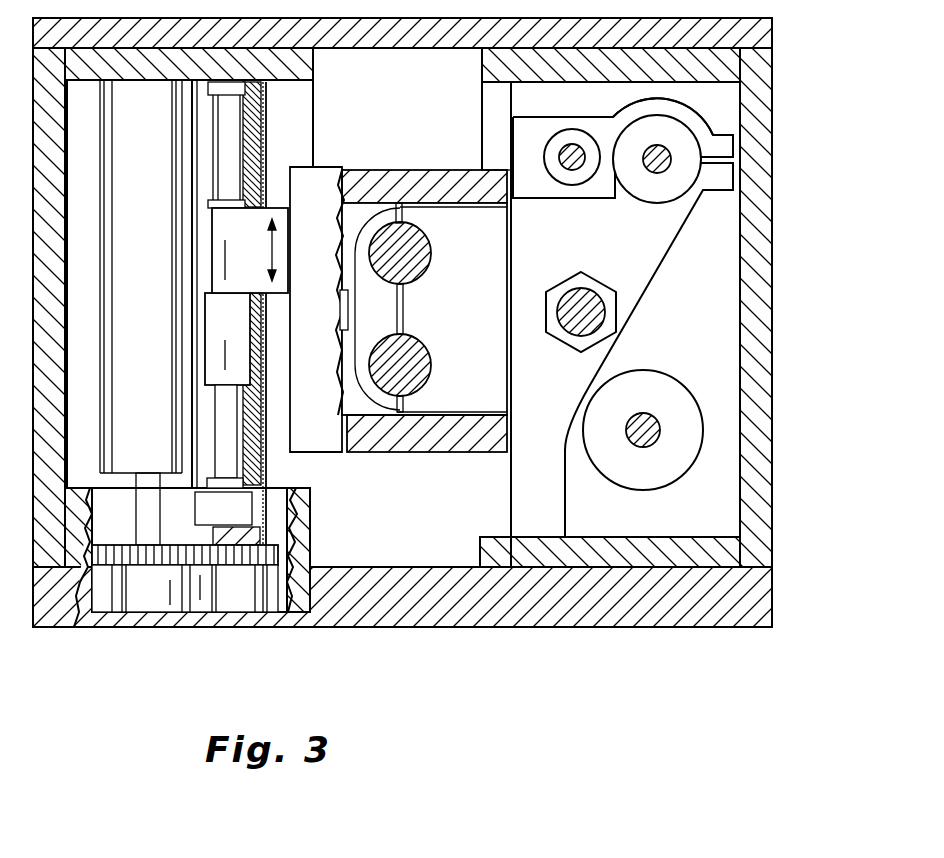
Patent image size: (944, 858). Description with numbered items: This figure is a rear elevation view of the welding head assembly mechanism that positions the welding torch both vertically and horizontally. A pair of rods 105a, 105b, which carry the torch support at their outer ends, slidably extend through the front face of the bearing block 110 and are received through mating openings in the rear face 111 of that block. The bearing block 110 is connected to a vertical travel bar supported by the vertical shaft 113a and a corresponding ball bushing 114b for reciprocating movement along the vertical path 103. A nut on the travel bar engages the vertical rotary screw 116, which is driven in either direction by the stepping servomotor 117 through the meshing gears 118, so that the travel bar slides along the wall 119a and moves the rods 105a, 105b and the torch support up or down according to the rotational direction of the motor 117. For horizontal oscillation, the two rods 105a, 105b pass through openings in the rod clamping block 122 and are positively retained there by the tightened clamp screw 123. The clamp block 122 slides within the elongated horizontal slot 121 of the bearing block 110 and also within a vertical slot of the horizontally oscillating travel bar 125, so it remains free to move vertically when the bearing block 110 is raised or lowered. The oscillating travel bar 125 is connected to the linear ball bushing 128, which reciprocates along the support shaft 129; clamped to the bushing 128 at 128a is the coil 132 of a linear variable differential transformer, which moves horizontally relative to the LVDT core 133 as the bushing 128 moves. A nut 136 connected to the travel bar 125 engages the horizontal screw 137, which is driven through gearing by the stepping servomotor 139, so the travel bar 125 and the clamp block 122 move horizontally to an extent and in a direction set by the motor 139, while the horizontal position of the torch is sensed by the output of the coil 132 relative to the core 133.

The vertical path 103 is at (270, 251).
The rod 105a is at (430, 250).
The rod 105b is at (430, 362).
The bearing block 110 is at (402, 168).
The rear face of the bearing block 111 is at (337, 437).
The vertical shaft 113a is at (230, 146).
The ball bushing 114b is at (245, 337).
The vertical rotary screw 116 is at (263, 115).
The stepping servomotor 117 is at (150, 264).
The meshing gears 118 is at (199, 597).
The wall 119a is at (492, 104).
The elongated horizontal slot 121 is at (430, 205).
The rod clamping block 122 is at (470, 304).
The clamp screw 123 is at (336, 276).
The horizontally oscillating travel bar 125 is at (656, 288).
The linear ball bushing 128 is at (560, 150).
The clamp location on ball bushing 128a is at (697, 110).
The support shaft 129 is at (575, 147).
The LVDT coil 132 is at (637, 182).
The LVDT core 133 is at (660, 170).
The nut 136 is at (610, 317).
The horizontal screw 137 is at (590, 330).
The stepping servomotor 139 is at (673, 490).